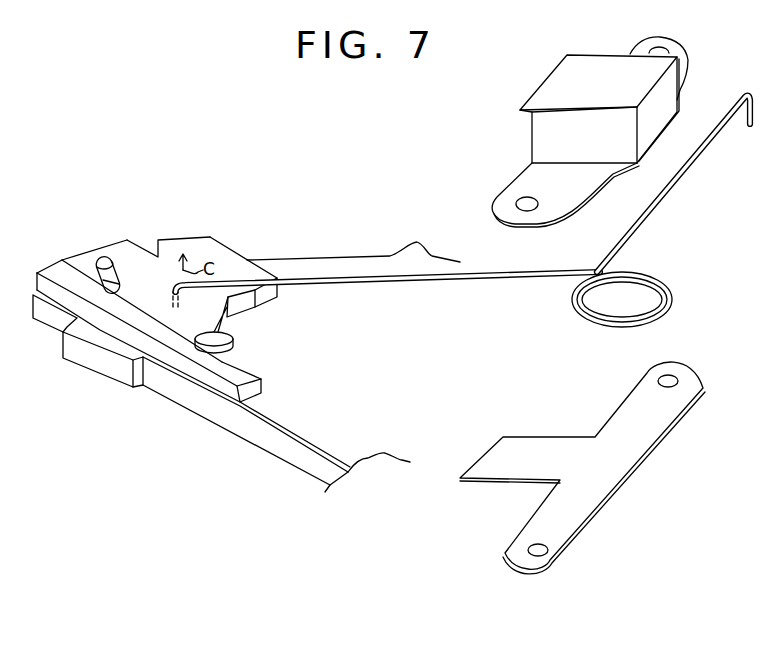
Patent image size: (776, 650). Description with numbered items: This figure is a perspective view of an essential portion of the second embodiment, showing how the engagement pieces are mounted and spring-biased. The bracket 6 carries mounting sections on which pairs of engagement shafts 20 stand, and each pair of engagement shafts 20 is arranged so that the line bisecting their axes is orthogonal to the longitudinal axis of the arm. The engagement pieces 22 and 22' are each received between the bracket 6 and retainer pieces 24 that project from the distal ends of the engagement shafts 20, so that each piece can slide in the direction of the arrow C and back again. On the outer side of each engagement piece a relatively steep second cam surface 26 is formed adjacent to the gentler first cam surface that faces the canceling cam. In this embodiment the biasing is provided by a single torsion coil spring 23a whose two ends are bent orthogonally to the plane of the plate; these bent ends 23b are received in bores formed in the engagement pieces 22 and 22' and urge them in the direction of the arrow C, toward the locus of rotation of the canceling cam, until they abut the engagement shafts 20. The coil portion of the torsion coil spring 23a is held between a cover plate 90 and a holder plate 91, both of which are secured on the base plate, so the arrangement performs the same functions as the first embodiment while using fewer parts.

The bracket 6 is at (435, 214).
The engagement shafts 20 is at (240, 347).
The engagement piece 22 is at (186, 313).
The engagement piece 22' is at (186, 313).
The torsion coil spring 23a is at (482, 286).
The bent ends 23b is at (171, 300).
The retainer pieces 24 is at (107, 268).
The second cam surface 26 is at (153, 250).
The cover plate 90 is at (607, 425).
The holder plate 91 is at (543, 90).